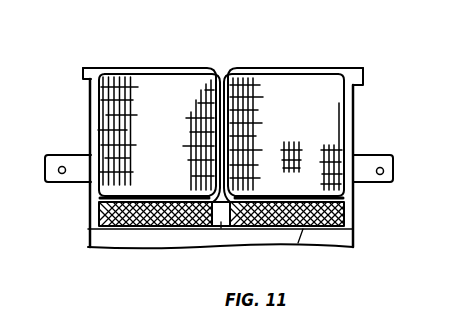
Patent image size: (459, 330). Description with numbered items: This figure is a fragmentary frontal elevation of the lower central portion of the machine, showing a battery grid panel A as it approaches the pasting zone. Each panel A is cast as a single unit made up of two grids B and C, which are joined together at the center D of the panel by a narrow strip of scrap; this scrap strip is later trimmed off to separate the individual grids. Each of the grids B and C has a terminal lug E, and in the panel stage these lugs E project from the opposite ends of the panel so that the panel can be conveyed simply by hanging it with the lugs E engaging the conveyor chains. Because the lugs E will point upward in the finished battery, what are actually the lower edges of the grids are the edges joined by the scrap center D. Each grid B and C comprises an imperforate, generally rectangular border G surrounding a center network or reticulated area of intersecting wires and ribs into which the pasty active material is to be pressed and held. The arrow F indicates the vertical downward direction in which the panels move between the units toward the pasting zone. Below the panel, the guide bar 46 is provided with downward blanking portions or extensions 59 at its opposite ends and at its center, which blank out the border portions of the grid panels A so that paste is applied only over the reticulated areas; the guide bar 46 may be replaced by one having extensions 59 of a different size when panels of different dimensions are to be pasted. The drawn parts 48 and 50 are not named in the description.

The grid panel A is at (328, 67).
The grid B is at (137, 114).
The grid C is at (282, 89).
The center of the panel D is at (237, 76).
The terminal lug E is at (83, 68).
The arrow F is at (220, 61).
The border G is at (103, 84).
The guide bar 46 is at (357, 197).
The base plate 48 is at (298, 243).
The base 50 is at (355, 240).
The blanking portions or extensions 59 is at (88, 212).